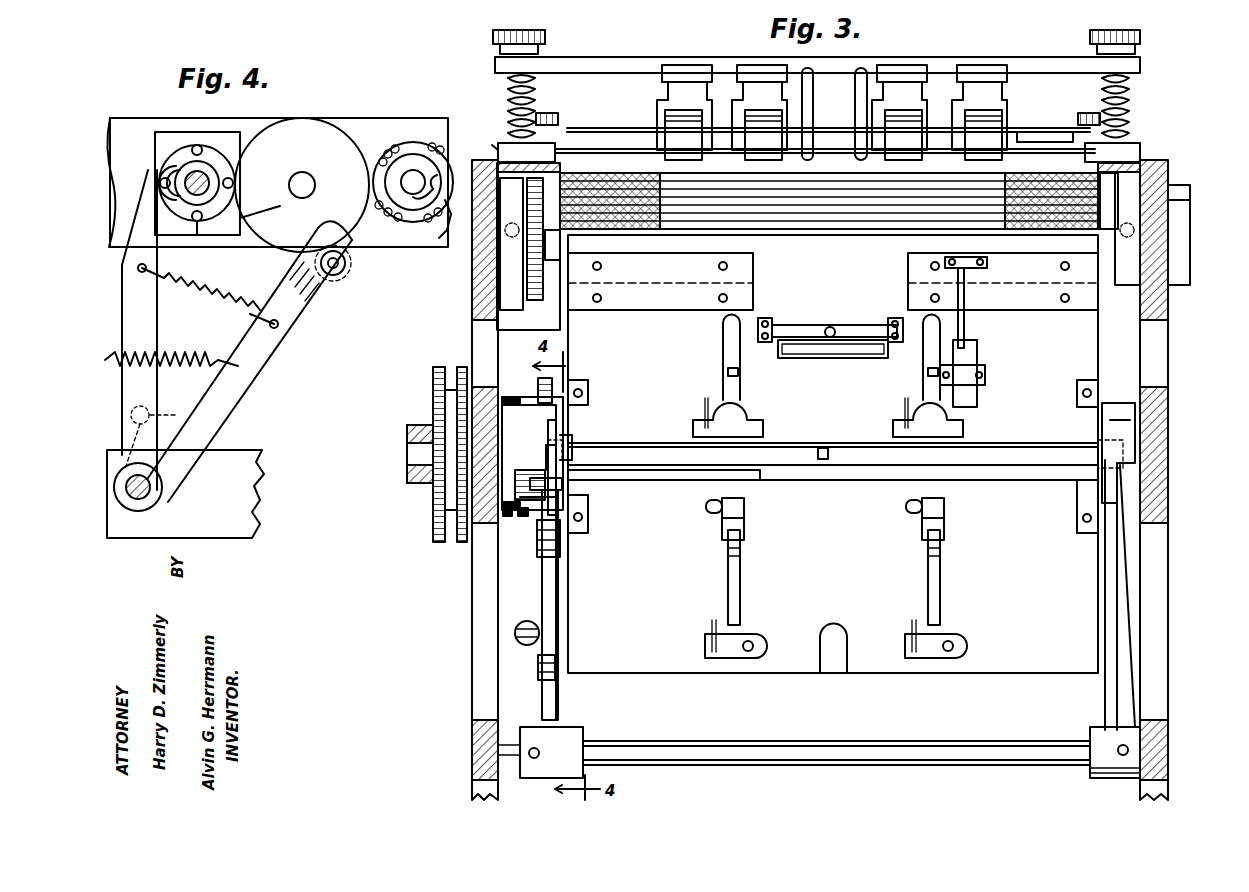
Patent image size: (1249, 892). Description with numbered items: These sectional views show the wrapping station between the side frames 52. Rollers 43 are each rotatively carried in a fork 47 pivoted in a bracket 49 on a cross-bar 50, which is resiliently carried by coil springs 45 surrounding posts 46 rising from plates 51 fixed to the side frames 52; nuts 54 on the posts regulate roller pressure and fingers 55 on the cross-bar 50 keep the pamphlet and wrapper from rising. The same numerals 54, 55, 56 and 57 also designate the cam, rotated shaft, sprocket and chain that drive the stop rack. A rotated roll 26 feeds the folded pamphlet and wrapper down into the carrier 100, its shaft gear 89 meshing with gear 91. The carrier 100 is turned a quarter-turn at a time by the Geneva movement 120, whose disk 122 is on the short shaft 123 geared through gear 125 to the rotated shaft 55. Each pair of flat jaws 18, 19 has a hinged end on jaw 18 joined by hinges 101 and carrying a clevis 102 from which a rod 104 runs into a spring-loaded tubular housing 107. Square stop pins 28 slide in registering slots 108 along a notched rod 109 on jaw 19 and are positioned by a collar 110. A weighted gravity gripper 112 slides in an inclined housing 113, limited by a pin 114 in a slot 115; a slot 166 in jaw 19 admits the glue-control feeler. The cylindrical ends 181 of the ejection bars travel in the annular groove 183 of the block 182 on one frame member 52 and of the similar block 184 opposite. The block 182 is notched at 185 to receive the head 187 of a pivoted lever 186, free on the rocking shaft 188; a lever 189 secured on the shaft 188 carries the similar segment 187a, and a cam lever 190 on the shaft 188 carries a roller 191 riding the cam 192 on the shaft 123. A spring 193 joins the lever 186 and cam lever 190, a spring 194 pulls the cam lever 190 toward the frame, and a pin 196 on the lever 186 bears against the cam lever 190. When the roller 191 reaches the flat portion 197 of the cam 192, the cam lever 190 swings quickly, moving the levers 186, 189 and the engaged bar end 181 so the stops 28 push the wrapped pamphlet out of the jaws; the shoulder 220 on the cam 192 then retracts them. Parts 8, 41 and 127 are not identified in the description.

In FIG. 3, the cross bar 8 is at (1038, 133).
In FIG. 3, the jaw 18 is at (833, 454).
In FIG. 3, the jaw 19 is at (878, 464).
In FIG. 3, the rotated roll 26 is at (839, 201).
In FIG. 3, the adjustable stop member 28 is at (727, 373).
In FIG. 3, the nut 41 is at (560, 116).
In FIG. 3, the roller 43 is at (760, 112).
In FIG. 3, the coil spring 45 is at (530, 30).
In FIG. 3, the post 46 is at (536, 95).
In FIG. 3, the fork 47 is at (662, 92).
In FIG. 3, the bracket 49 is at (683, 66).
In FIG. 3, the cross-bar 50 is at (626, 60).
In FIG. 3, the plate 51 is at (492, 140).
In FIG. 3, the side frame 52 is at (482, 165).
In FIG. 4, the nut 54 is at (396, 160).
In FIG. 3, the nut 54 is at (540, 46).
In FIG. 4, the finger 55 is at (405, 185).
In FIG. 3, the finger 55 is at (810, 118).
In FIG. 4, the sprocket 56 is at (420, 225).
In FIG. 4, the chain 57 is at (418, 140).
In FIG. 3, the gear 89 is at (500, 240).
In FIG. 3, the gear 91 is at (525, 270).
In FIG. 3, the carrier 100 is at (1075, 390).
In FIG. 3, the hinge 101 is at (638, 290).
In FIG. 3, the clevis 102 is at (988, 264).
In FIG. 3, the rod 104 is at (966, 328).
In FIG. 3, the tubular housing 107 is at (977, 393).
In FIG. 3, the slot 108 is at (742, 390).
In FIG. 3, the notched rod 109 is at (760, 425).
In FIG. 3, the collar 110 is at (712, 514).
In FIG. 3, the gravity gripper 112 is at (835, 350).
In FIG. 3, the inclined housing 113 is at (770, 320).
In FIG. 3, the pin 114 is at (885, 322).
In FIG. 3, the slot 115 is at (826, 325).
In FIG. 3, the Geneva movement 120 is at (445, 488).
In FIG. 3, the disk 122 is at (433, 395).
In FIG. 4, the short shaft 123 is at (305, 183).
In FIG. 3, the gear 125 is at (482, 390).
In FIG. 3, the stop 127 is at (524, 520).
In FIG. 3, the slot 166 is at (828, 462).
In FIG. 4, the cylindrical portion 181 is at (200, 215).
In FIG. 3, the cylindrical portion 181 is at (575, 445).
In FIG. 4, the block 182 is at (165, 135).
In FIG. 3, the block 182 is at (532, 453).
In FIG. 4, the annular groove 183 is at (222, 160).
In FIG. 3, the block 184 is at (1115, 405).
In FIG. 4, the notch 185 is at (200, 145).
In FIG. 4, the lever 186 is at (160, 320).
In FIG. 3, the lever 186 is at (562, 622).
In FIG. 4, the head portion 187 is at (165, 175).
In FIG. 3, the head portion 187 is at (566, 438).
In FIG. 3, the segment 187a is at (1105, 443).
In FIG. 4, the rocking shaft 188 is at (163, 488).
In FIG. 3, the rocking shaft 188 is at (652, 742).
In FIG. 3, the lever 189 is at (1108, 572).
In FIG. 4, the cam lever 190 is at (258, 378).
In FIG. 3, the cam lever 190 is at (560, 592).
In FIG. 4, the roller 191 is at (352, 265).
In FIG. 3, the roller 191 is at (565, 542).
In FIG. 4, the cam 192 is at (315, 123).
In FIG. 3, the cam 192 is at (555, 378).
In FIG. 4, the spring 193 is at (213, 283).
In FIG. 4, the spring 194 is at (172, 352).
In FIG. 3, the spring 194 is at (514, 633).
In FIG. 4, the pin 196 is at (152, 420).
In FIG. 3, the pin 196 is at (560, 664).
In FIG. 4, the flat portion 197 is at (270, 216).
In FIG. 4, the shoulder 220 is at (212, 183).